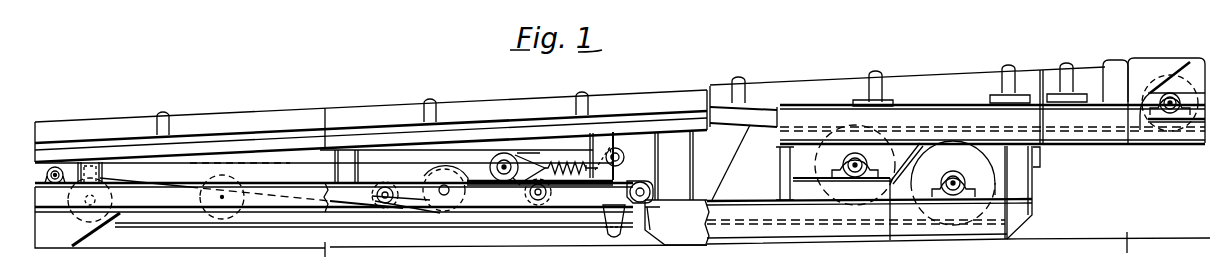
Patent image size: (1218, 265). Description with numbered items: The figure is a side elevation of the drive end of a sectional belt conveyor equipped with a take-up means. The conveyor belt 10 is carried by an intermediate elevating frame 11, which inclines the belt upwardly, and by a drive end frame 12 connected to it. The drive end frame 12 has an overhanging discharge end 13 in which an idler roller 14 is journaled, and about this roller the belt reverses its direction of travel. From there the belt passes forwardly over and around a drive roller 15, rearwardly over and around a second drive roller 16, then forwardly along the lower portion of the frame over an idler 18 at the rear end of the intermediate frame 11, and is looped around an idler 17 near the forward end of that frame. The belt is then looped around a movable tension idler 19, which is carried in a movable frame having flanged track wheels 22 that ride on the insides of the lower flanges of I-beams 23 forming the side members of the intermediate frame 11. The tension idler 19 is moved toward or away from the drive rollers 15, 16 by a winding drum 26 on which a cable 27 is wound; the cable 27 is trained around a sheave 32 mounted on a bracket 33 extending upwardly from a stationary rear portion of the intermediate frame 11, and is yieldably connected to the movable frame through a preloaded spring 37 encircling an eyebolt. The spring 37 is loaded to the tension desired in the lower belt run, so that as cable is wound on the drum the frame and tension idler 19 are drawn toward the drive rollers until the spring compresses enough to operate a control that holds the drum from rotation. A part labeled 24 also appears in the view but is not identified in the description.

The conveyor belt 10 is at (283, 111).
The intermediate elevating frame 11 is at (275, 217).
The drive end frame 12 is at (1034, 205).
The overhanging discharge end 13 is at (1135, 65).
The idler roller 14 is at (1188, 122).
The drive roller 15 is at (886, 157).
The drive roller 16 is at (902, 208).
The idler 17 is at (115, 215).
The idler 18 is at (603, 231).
The tension idler 19 is at (428, 170).
The flanged track wheels 22 is at (372, 208).
The I-beams 23 is at (300, 213).
The bracket arm 24 is at (513, 180).
The winding drum 26 is at (491, 167).
The cable 27 is at (571, 159).
The sheave 32 is at (624, 153).
The bracket 33 is at (630, 167).
The preloaded spring 37 is at (574, 188).